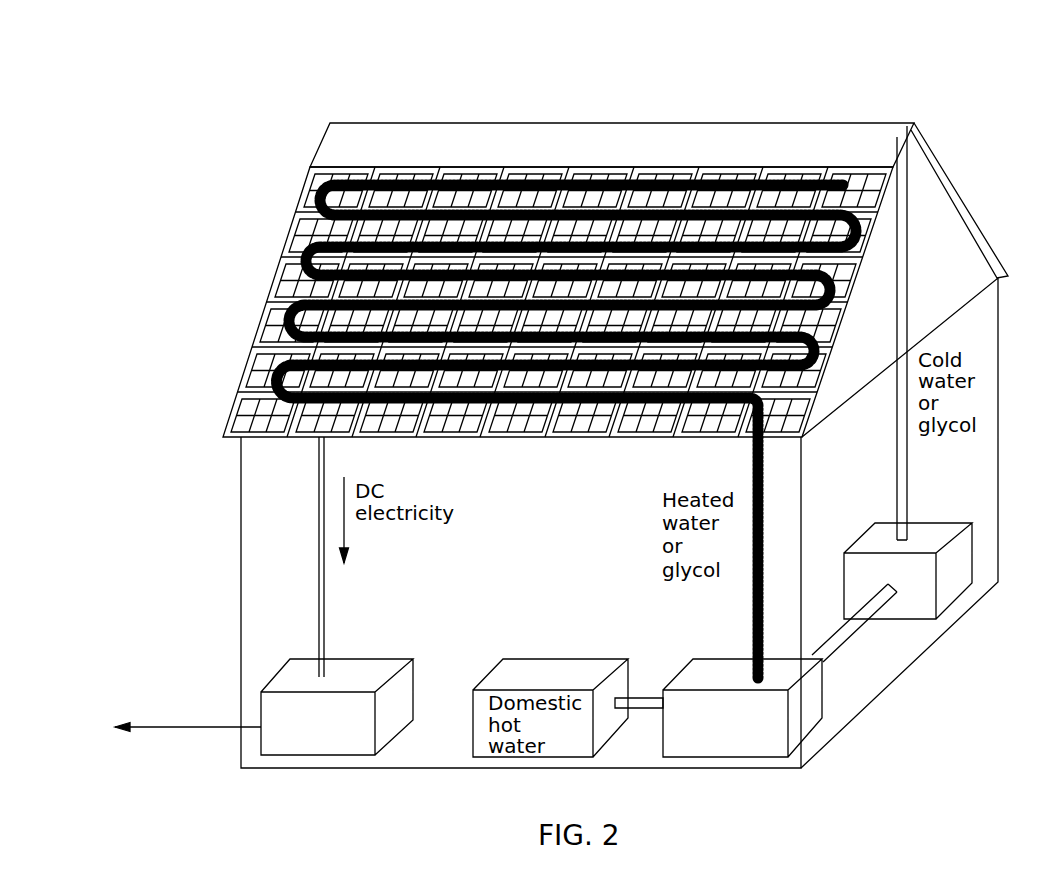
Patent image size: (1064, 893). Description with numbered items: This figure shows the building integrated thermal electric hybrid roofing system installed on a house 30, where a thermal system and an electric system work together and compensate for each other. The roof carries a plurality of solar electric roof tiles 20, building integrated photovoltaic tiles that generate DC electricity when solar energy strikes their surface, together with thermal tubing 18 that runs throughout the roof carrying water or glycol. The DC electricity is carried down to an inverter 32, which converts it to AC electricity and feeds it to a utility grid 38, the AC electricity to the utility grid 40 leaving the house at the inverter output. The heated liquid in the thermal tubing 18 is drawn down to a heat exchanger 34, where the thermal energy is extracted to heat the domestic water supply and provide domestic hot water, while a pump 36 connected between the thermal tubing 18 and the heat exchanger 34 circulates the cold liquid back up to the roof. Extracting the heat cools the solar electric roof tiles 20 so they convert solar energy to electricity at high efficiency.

The house 30 is at (870, 83).
The thermal tubing 18 is at (828, 217).
The solar electric roof tiles 20 is at (882, 187).
The utility grid 38 is at (853, 185).
The inverter 32 is at (290, 747).
The heat exchanger 34 is at (807, 723).
The pump 36 is at (953, 587).
The AC electricity output to utility grid 40 is at (135, 735).